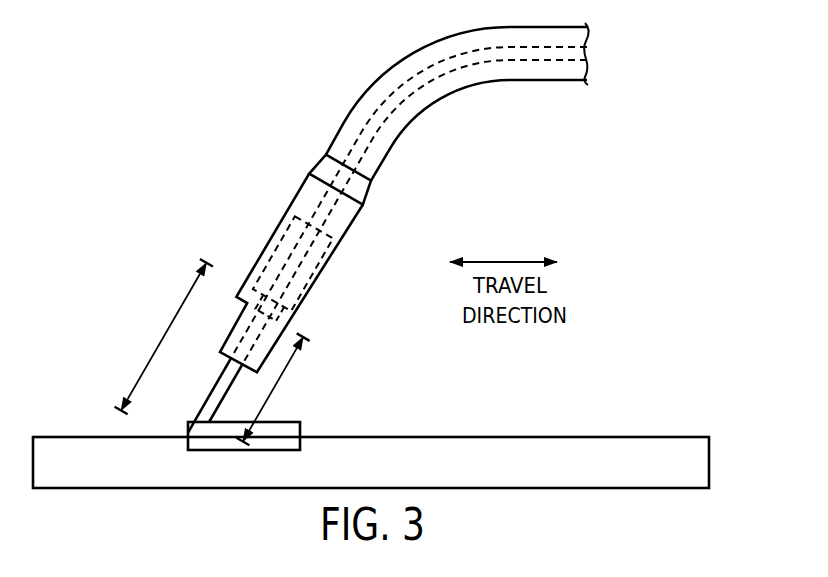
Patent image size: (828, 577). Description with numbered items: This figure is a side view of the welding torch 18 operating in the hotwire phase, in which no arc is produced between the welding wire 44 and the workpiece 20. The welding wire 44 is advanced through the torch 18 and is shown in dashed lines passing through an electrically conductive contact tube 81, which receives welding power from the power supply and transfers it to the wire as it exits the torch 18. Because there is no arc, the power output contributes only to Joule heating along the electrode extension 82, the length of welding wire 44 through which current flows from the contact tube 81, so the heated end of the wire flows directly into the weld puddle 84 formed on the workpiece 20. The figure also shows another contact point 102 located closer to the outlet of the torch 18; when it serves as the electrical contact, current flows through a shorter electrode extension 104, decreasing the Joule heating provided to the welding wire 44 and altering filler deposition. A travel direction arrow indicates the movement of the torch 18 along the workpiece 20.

The welding torch 18 is at (363, 68).
The welding wire 44 is at (355, 145).
The contact tube 81 is at (315, 278).
The contact point 102 is at (281, 323).
The shorter electrode extension 104 is at (278, 380).
The electrode extension 82 is at (177, 312).
The weld puddle 84 is at (235, 450).
The workpiece 20 is at (385, 477).